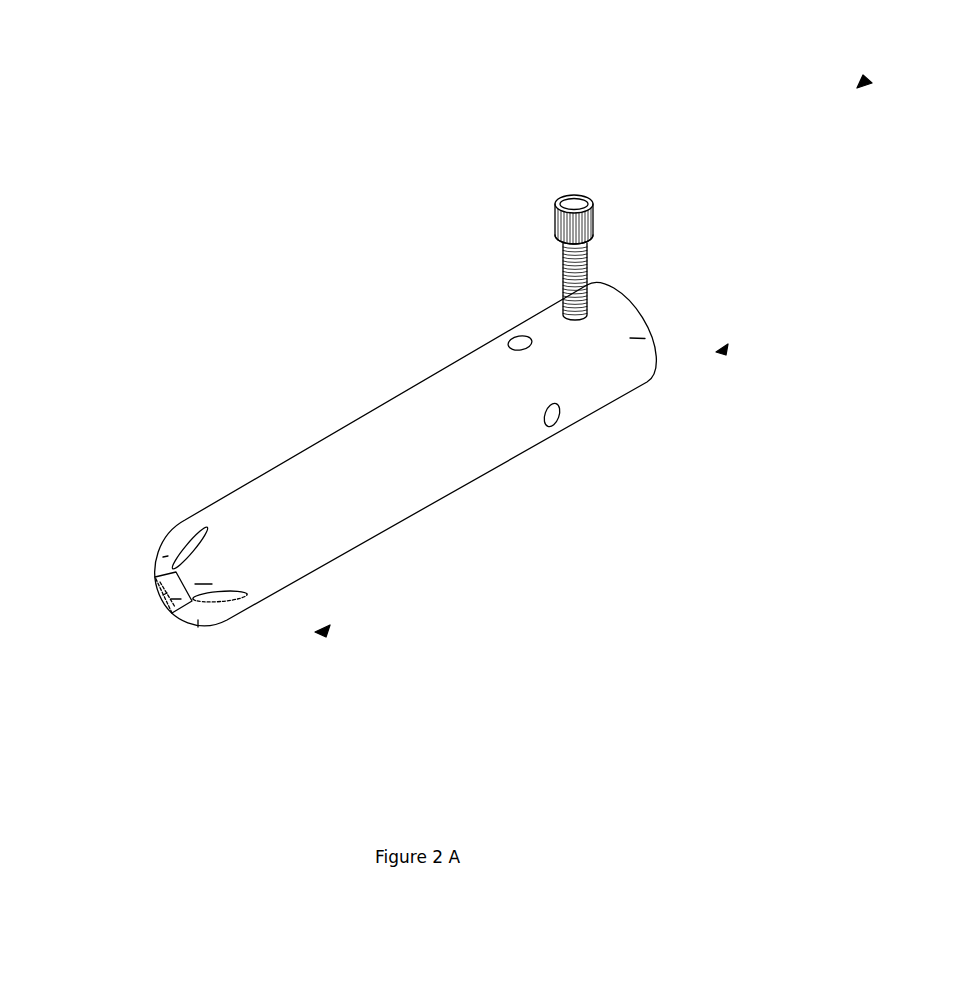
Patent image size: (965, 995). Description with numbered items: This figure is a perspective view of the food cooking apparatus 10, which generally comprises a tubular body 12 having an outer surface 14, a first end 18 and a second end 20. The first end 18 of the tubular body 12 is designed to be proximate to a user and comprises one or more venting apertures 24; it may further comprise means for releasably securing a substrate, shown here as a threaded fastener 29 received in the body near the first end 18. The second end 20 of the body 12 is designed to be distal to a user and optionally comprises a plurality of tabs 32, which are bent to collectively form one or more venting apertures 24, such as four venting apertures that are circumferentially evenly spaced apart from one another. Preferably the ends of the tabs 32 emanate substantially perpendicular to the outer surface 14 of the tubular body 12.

The food cooking apparatus 10 is at (866, 80).
The tubular body 12 is at (437, 502).
The outer surface 14 is at (645, 338).
The first end 18 is at (722, 351).
The second end 20 is at (322, 633).
The venting apertures 24 is at (518, 342).
The set screw 29 is at (572, 204).
The tabs 32 is at (163, 557).